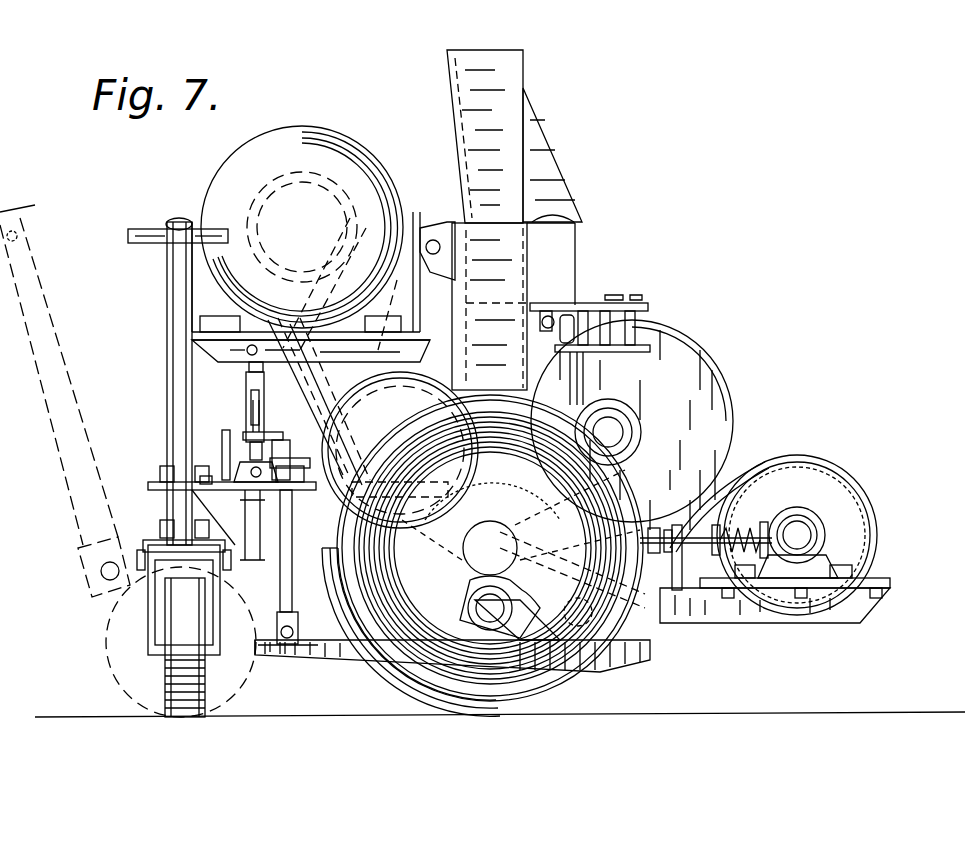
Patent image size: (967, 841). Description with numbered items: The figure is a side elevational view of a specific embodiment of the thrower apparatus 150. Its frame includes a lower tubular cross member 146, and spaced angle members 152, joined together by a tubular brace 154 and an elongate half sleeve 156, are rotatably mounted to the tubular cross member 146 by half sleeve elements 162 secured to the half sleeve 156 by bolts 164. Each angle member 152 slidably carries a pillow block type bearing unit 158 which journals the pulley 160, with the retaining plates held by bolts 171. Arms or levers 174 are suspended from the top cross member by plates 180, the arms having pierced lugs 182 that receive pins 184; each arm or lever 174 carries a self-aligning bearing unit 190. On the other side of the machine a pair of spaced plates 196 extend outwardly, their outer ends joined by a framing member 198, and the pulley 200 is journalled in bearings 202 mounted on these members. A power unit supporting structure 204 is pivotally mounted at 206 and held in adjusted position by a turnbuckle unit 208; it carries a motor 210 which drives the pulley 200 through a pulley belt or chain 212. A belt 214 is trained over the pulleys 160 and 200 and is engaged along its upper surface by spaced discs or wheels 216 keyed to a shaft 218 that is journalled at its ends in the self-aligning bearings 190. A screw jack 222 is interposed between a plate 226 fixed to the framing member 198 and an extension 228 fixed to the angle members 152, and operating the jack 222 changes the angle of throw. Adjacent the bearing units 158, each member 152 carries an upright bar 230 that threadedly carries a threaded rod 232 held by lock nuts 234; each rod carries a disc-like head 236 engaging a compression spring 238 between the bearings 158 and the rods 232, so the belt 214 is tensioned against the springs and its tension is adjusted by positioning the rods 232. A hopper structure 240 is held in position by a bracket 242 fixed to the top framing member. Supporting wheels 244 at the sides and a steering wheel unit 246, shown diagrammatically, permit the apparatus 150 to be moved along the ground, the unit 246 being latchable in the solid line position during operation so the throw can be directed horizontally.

The lower tubular cross member 146 is at (505, 608).
The thrower apparatus 150 is at (700, 192).
The angle members 152 is at (715, 620).
The tubular brace 154 is at (605, 662).
The elongate half sleeve 156 is at (525, 642).
The pillow block type bearing unit 158 is at (832, 530).
The pulley 160 is at (830, 480).
The half sleeve elements 162 is at (472, 595).
The bolts 164 is at (462, 612).
The bolts 171 is at (881, 596).
The arms or levers 174 is at (590, 392).
The plates 180 is at (615, 302).
The pierced lugs 182 is at (550, 302).
The pins 184 is at (566, 320).
The self-aligning bearing unit 190 is at (625, 438).
The spaced plates 196 is at (305, 555).
The framing member 198 is at (248, 496).
The pulley 200 is at (372, 400).
The bearings 202 is at (378, 460).
The power unit supporting structure 204 is at (424, 225).
The pivot 206 is at (440, 247).
The turnbuckle unit 208 is at (246, 380).
The motor 210 is at (305, 140).
The pulley belt or chain 212 is at (310, 363).
The belt 214 is at (810, 455).
The discs or wheels 216 is at (678, 335).
The shaft 218 is at (625, 415).
The screw jack 222 is at (278, 545).
The plate 226 is at (218, 480).
The extension 228 is at (325, 662).
The upright bar 230 is at (677, 570).
The threaded rod 232 is at (672, 524).
The lock nuts 234 is at (668, 528).
The disc-like head 236 is at (705, 497).
The compression spring 238 is at (740, 522).
The hopper structure 240 is at (510, 86).
The bracket 242 is at (548, 178).
The supporting wheels 244 is at (455, 700).
The steering wheel unit 246 is at (105, 616).